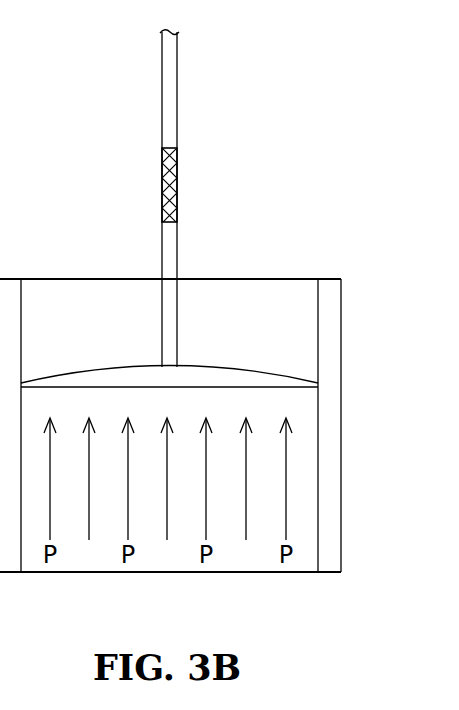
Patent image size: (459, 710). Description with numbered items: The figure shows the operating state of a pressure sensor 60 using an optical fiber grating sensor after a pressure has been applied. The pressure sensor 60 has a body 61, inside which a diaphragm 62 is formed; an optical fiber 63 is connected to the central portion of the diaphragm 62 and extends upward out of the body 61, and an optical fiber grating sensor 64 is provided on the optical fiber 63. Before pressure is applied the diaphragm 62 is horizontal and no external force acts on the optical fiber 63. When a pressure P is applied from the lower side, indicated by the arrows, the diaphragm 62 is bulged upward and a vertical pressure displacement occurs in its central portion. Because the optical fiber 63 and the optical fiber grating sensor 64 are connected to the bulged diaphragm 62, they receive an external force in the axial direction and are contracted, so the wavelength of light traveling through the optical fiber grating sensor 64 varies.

The pressure sensor 60 is at (284, 60).
The body 61 is at (341, 377).
The diaphragm 62 is at (93, 368).
The optical fiber 63 is at (162, 90).
The optical fiber grating sensor 64 is at (177, 182).